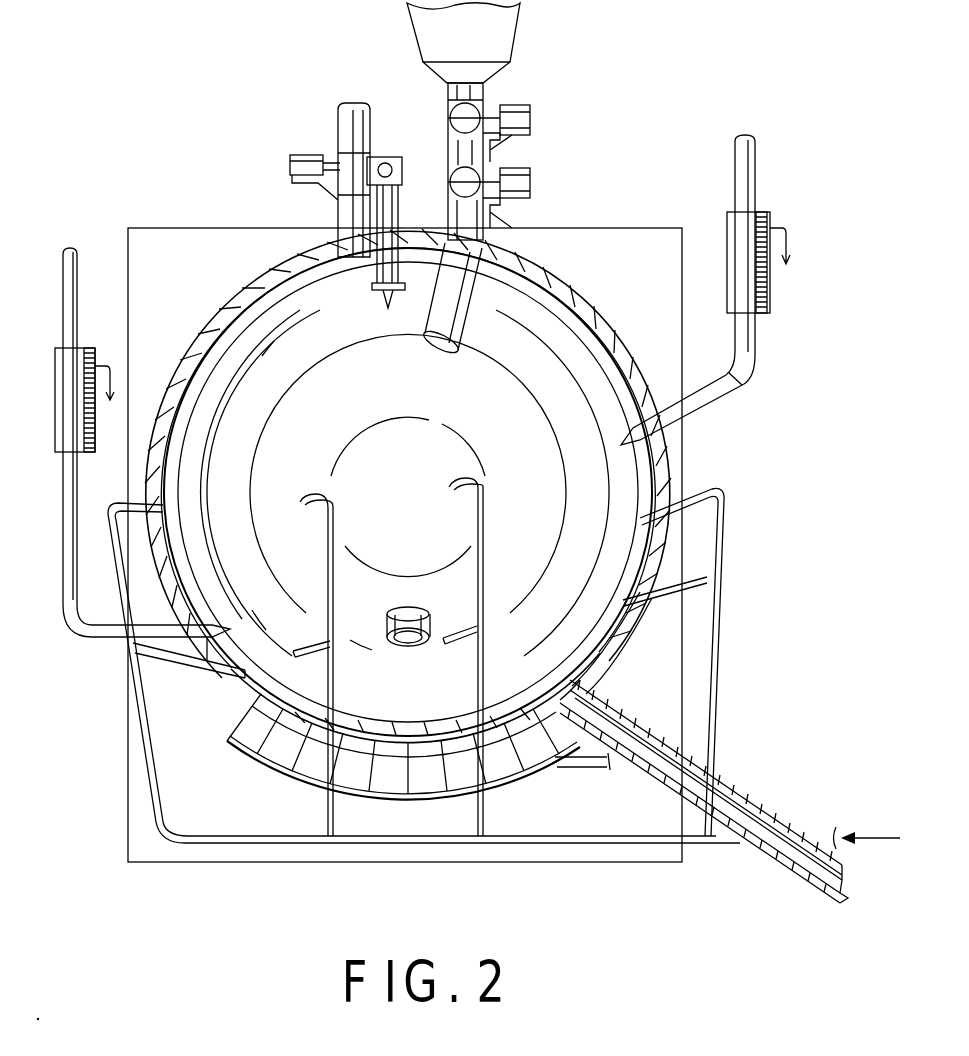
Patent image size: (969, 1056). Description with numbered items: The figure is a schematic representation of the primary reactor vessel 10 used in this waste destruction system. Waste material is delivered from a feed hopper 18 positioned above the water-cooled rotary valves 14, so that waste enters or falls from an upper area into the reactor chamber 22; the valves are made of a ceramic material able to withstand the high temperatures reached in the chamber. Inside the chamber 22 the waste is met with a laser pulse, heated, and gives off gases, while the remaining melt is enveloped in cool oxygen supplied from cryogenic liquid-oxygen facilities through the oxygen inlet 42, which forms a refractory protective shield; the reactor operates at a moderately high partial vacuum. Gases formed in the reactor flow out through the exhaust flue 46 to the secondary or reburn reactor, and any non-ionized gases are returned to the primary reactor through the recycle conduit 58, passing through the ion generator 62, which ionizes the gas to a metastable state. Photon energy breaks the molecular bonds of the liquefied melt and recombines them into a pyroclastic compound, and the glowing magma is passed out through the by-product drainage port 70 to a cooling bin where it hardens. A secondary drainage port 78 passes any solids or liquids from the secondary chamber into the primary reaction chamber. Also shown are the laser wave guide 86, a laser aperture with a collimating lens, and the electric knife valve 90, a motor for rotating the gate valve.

The reactor vessel 10 is at (700, 550).
The water-cooled rotary valves 14 is at (532, 112).
The feed hopper 18 is at (530, 28).
The chamber 22 is at (430, 471).
The oxygen inlet 42 is at (572, 768).
The exhaust flue 46 is at (340, 132).
The recycle conduit 58 is at (72, 304).
The ion generator 62 is at (50, 400).
The by-product drainage port 70 is at (735, 782).
The secondary drainage port 78 is at (395, 612).
The laser wave guide 86 is at (400, 190).
The electric knife valve 90 is at (278, 153).